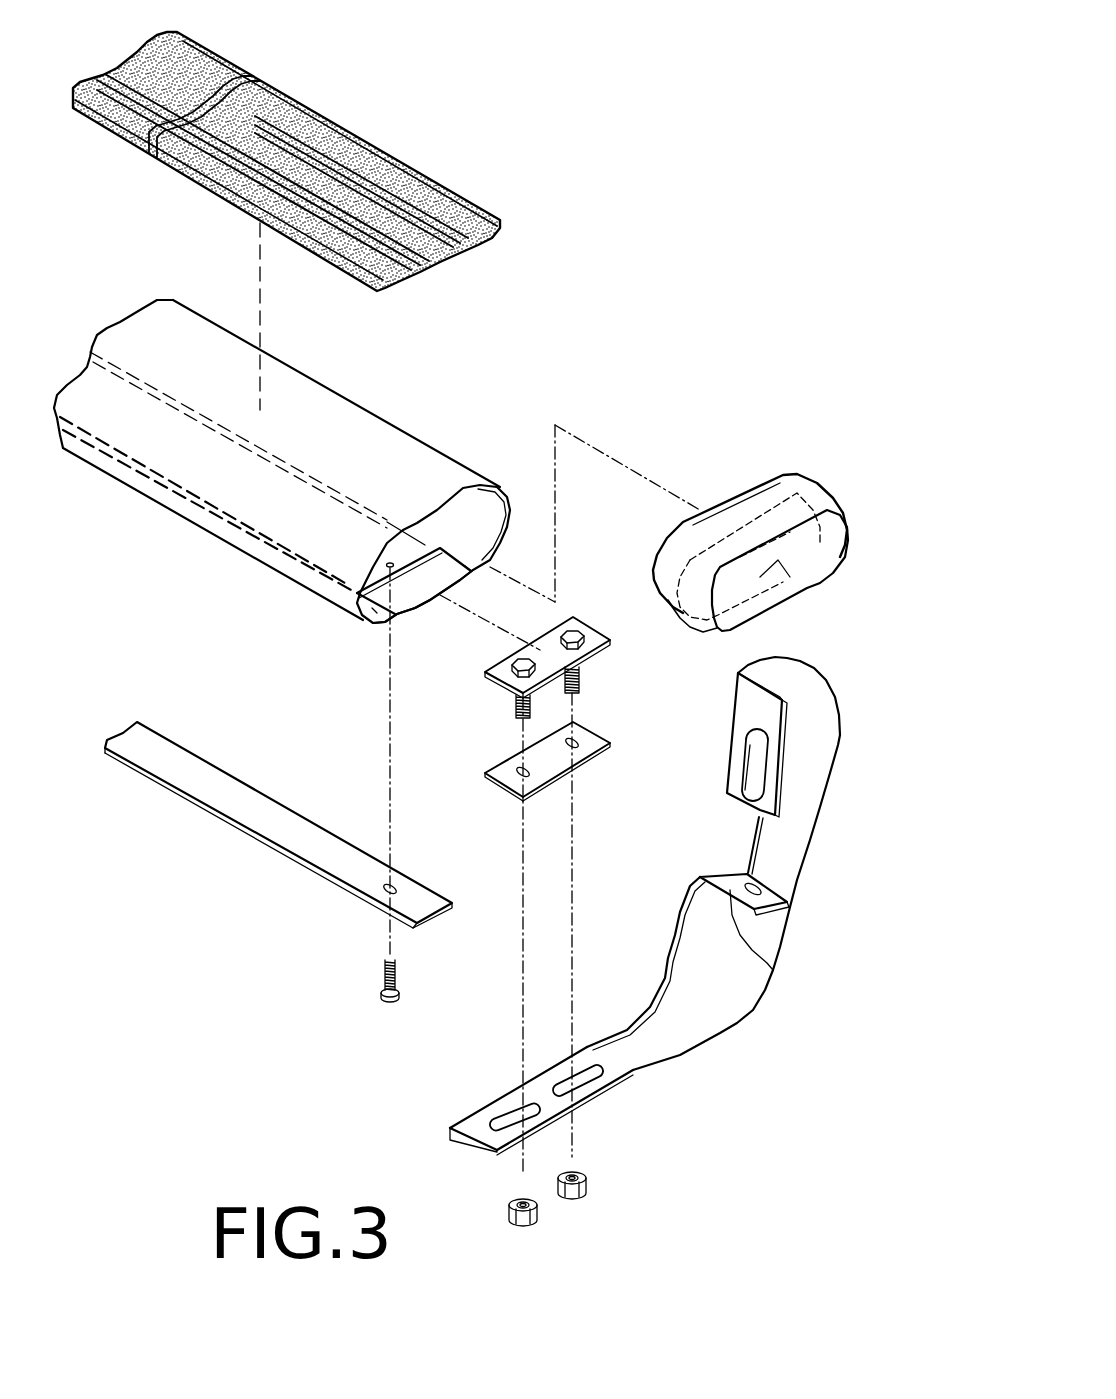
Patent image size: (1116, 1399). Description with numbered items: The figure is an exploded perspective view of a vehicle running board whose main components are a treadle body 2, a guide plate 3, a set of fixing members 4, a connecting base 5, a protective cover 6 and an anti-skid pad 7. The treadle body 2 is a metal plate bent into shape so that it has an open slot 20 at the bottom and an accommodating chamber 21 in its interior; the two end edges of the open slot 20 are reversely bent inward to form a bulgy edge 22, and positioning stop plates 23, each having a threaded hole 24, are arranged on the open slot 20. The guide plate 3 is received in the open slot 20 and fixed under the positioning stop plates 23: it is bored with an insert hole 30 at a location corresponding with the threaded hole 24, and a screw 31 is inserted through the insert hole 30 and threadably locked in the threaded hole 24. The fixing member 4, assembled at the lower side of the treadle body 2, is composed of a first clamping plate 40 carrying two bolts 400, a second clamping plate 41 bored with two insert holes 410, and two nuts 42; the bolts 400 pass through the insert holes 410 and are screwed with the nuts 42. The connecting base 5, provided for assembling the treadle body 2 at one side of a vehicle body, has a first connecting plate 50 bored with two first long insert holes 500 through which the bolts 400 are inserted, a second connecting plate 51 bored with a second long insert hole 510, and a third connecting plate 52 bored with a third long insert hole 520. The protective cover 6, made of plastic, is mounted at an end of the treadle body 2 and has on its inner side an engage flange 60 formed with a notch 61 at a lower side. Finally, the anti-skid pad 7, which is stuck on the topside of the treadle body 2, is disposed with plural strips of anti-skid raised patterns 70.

The treadle body 2 is at (293, 515).
The guide plate 3 is at (278, 850).
The fixing member 4 is at (561, 701).
The connecting base 5 is at (635, 917).
The protective cover 6 is at (760, 529).
The anti-skid pad 7 is at (286, 147).
The open slot 20 is at (410, 587).
The accommodating chamber 21 is at (473, 507).
The bulgy edge 22 is at (377, 613).
The positioning stop plate 23 is at (417, 553).
The threaded hole 24 is at (388, 562).
The insert hole 30 is at (383, 893).
The screw 31 is at (397, 985).
The first clamping plate 40 is at (546, 658).
The second clamping plate 41 is at (571, 798).
The nut 42 is at (583, 1190).
The first connecting plate 50 is at (562, 1112).
The second connecting plate 51 is at (790, 946).
The third connecting plate 52 is at (811, 759).
The engage flange 60 is at (743, 503).
The notch 61 is at (787, 592).
The anti-skid raised pattern 70 is at (420, 180).
The bolt 400 is at (580, 673).
The insert hole 410 is at (577, 748).
The first long insert hole 500 is at (503, 1125).
The second long insert hole 510 is at (780, 900).
The third long insert hole 520 is at (758, 773).